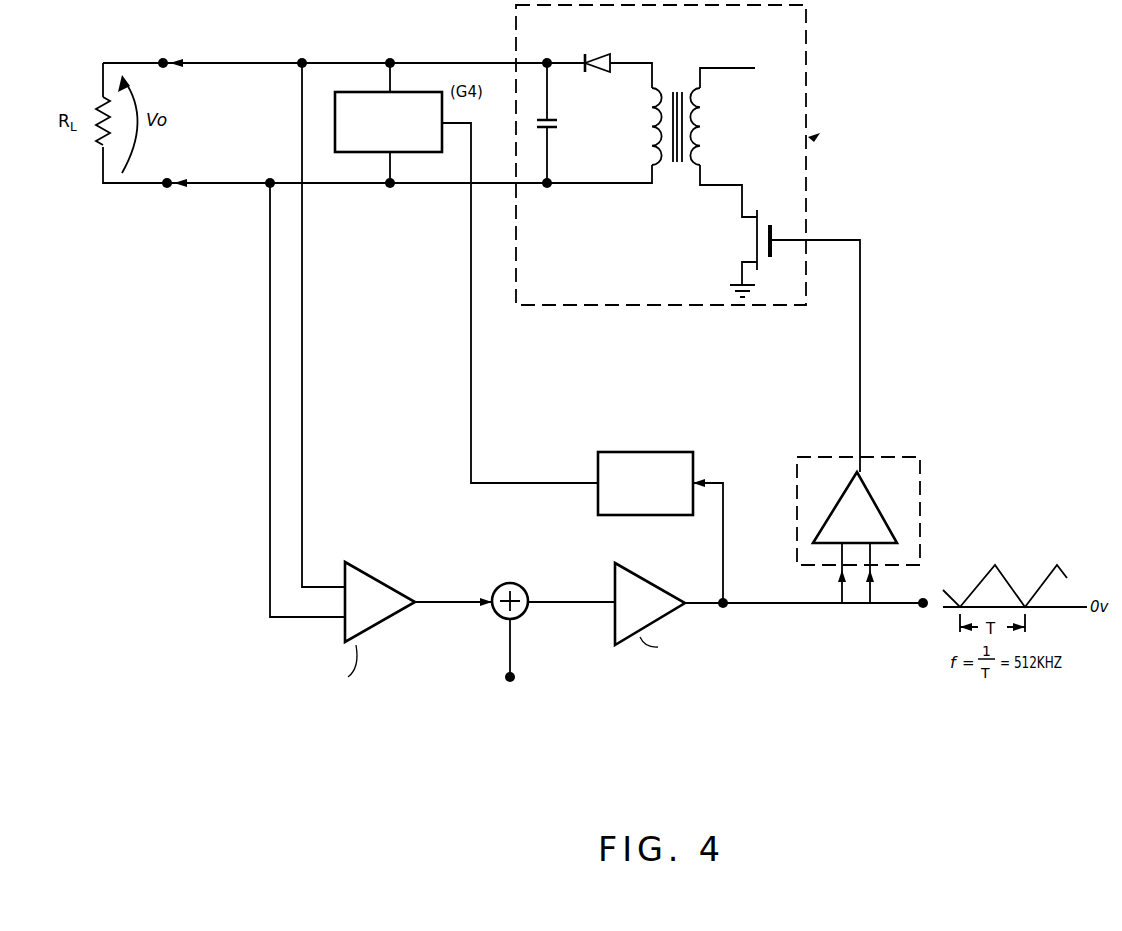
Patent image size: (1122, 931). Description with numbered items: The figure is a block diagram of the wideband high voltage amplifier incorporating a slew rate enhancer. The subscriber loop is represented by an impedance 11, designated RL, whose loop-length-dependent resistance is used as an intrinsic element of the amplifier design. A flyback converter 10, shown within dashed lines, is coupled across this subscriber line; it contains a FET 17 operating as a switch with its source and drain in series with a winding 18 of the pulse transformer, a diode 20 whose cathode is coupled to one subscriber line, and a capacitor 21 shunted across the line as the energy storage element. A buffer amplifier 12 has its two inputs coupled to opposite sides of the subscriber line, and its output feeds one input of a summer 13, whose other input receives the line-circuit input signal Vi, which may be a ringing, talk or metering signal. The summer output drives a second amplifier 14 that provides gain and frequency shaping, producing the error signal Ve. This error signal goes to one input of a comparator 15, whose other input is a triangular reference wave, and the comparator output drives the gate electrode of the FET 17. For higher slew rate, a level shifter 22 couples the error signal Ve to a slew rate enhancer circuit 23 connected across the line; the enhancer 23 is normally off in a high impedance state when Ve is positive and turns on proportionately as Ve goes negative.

The flyback converter 10 is at (810, 136).
The impedance 11 is at (100, 140).
The amplifier 12 is at (378, 628).
The summer 13 is at (524, 589).
The second amplifier 14 is at (652, 580).
The comparator 15 is at (838, 495).
The FET 17 is at (752, 213).
The winding 18 is at (700, 128).
The diode 20 is at (600, 72).
The capacitor 21 is at (553, 133).
The level shifter 22 is at (696, 455).
The slew rate enhancer circuit 23 is at (348, 152).